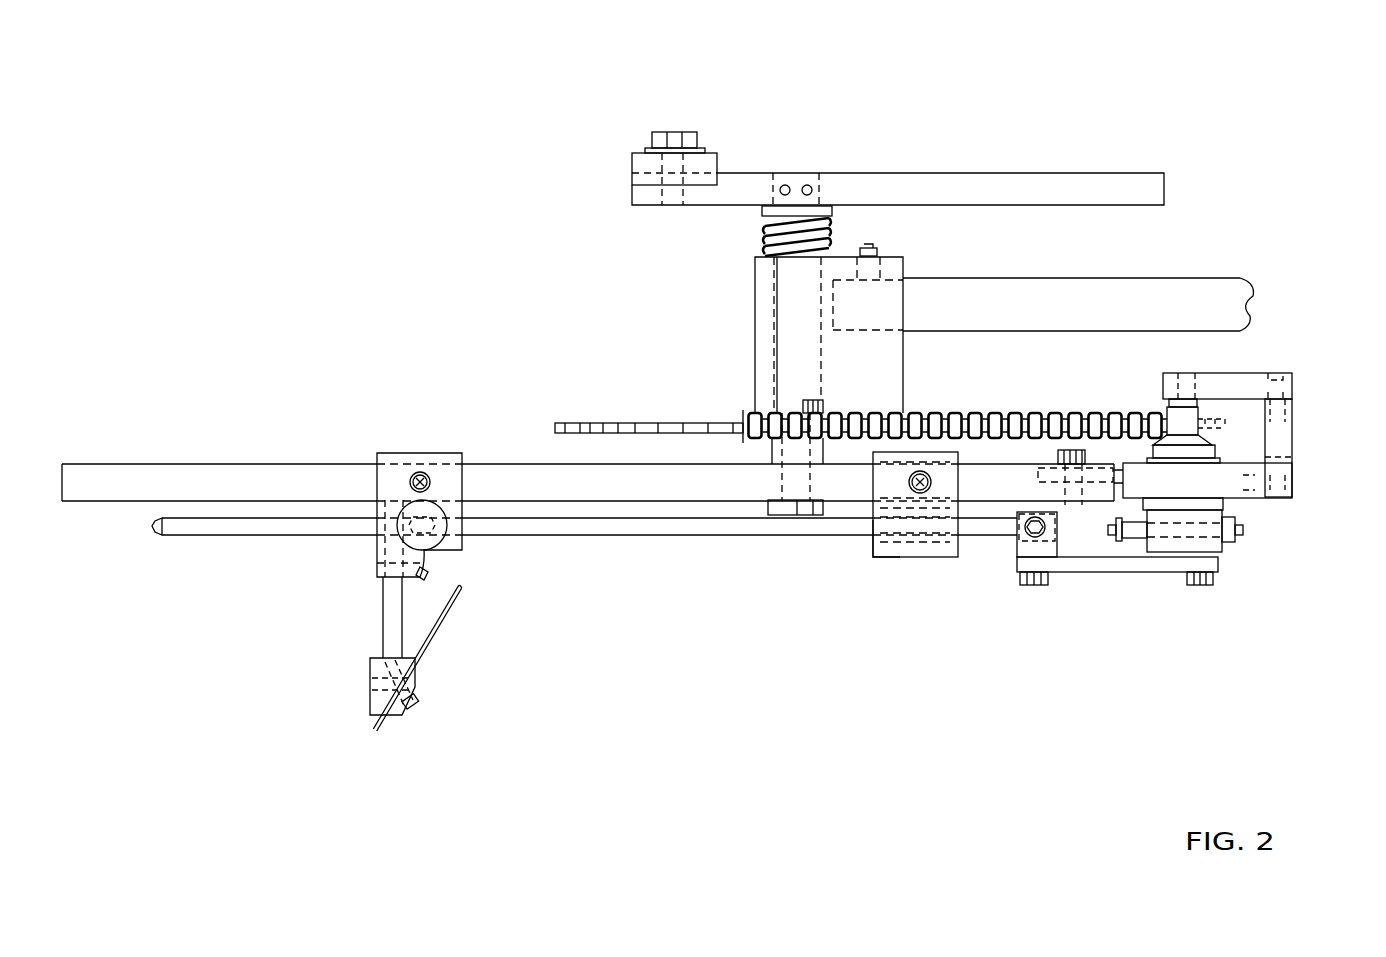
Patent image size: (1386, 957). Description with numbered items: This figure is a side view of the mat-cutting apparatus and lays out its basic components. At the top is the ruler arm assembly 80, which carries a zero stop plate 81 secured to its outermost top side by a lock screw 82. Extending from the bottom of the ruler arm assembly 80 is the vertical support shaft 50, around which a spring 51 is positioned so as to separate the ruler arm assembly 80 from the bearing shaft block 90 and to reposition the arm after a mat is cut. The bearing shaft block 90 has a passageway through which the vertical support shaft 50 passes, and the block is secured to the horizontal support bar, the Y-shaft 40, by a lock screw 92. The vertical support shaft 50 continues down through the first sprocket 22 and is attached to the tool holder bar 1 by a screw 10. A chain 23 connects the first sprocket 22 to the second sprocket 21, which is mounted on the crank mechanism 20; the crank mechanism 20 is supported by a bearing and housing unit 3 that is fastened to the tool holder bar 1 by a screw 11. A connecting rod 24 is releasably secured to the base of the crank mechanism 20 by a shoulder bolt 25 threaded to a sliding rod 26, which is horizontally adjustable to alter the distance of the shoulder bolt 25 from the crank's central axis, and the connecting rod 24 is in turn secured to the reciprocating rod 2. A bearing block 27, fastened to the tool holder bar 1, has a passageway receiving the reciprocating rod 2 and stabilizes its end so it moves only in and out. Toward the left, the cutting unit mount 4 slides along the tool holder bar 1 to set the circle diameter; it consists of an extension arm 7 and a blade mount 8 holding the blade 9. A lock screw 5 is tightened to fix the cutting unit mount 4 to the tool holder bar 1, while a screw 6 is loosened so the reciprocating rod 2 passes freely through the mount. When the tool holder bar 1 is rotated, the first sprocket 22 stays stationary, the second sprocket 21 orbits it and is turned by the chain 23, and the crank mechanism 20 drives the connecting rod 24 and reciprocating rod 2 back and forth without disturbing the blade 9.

The tool holder bar 1 is at (150, 481).
The reciprocating rod 2 is at (183, 526).
The bearing and housing unit 3 is at (1294, 437).
The cutting unit mount 4 is at (390, 489).
The lock screw 5 is at (418, 477).
The screw 6 is at (401, 539).
The extension arm 7 is at (383, 609).
The blade mount 8 is at (370, 706).
The blade 9 is at (437, 639).
The screw 10 is at (783, 509).
The screw 11 is at (1080, 448).
The crank mechanism 20 is at (1226, 553).
The second sprocket 21 is at (1227, 420).
The first sprocket 22 is at (572, 421).
The chain 23 is at (984, 414).
The connecting rod 24 is at (1142, 575).
The shoulder bolt 25 is at (1208, 589).
The sliding rod 26 is at (1246, 530).
The bearing block 27 is at (923, 560).
The Y-shaft 40 is at (1227, 294).
The vertical support shaft 50 is at (791, 451).
The spring 51 is at (760, 238).
The ruler arm assembly 80 is at (1022, 173).
The zero stop plate 81 is at (645, 166).
The lock screw 82 is at (667, 147).
The bearing shaft block 90 is at (766, 401).
The lock screw 92 is at (869, 251).